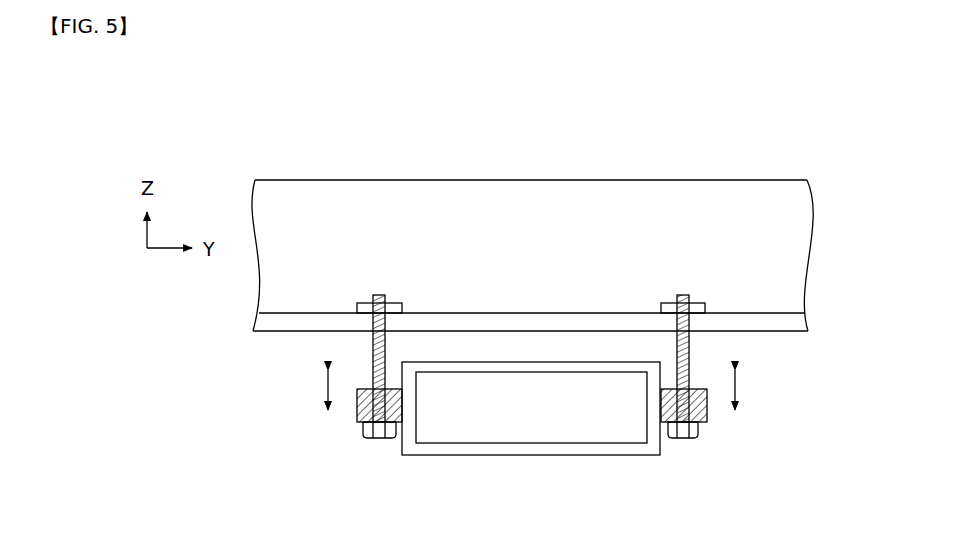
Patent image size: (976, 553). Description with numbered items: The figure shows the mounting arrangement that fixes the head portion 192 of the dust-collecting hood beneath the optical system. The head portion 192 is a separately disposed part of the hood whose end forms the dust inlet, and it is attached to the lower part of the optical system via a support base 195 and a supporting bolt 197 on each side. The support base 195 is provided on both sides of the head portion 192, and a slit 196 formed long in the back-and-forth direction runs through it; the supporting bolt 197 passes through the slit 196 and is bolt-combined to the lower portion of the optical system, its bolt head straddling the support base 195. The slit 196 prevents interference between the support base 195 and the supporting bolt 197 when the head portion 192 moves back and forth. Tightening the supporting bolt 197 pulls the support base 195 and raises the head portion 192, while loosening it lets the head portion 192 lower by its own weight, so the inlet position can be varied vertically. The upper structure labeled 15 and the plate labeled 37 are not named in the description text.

The battery pack case / plate 15 is at (470, 168).
The lower plate layer 37 is at (734, 326).
The head portion 192 is at (544, 449).
The support base 195 is at (363, 423).
The slit 196 is at (356, 413).
The supporting bolt 197 is at (373, 338).